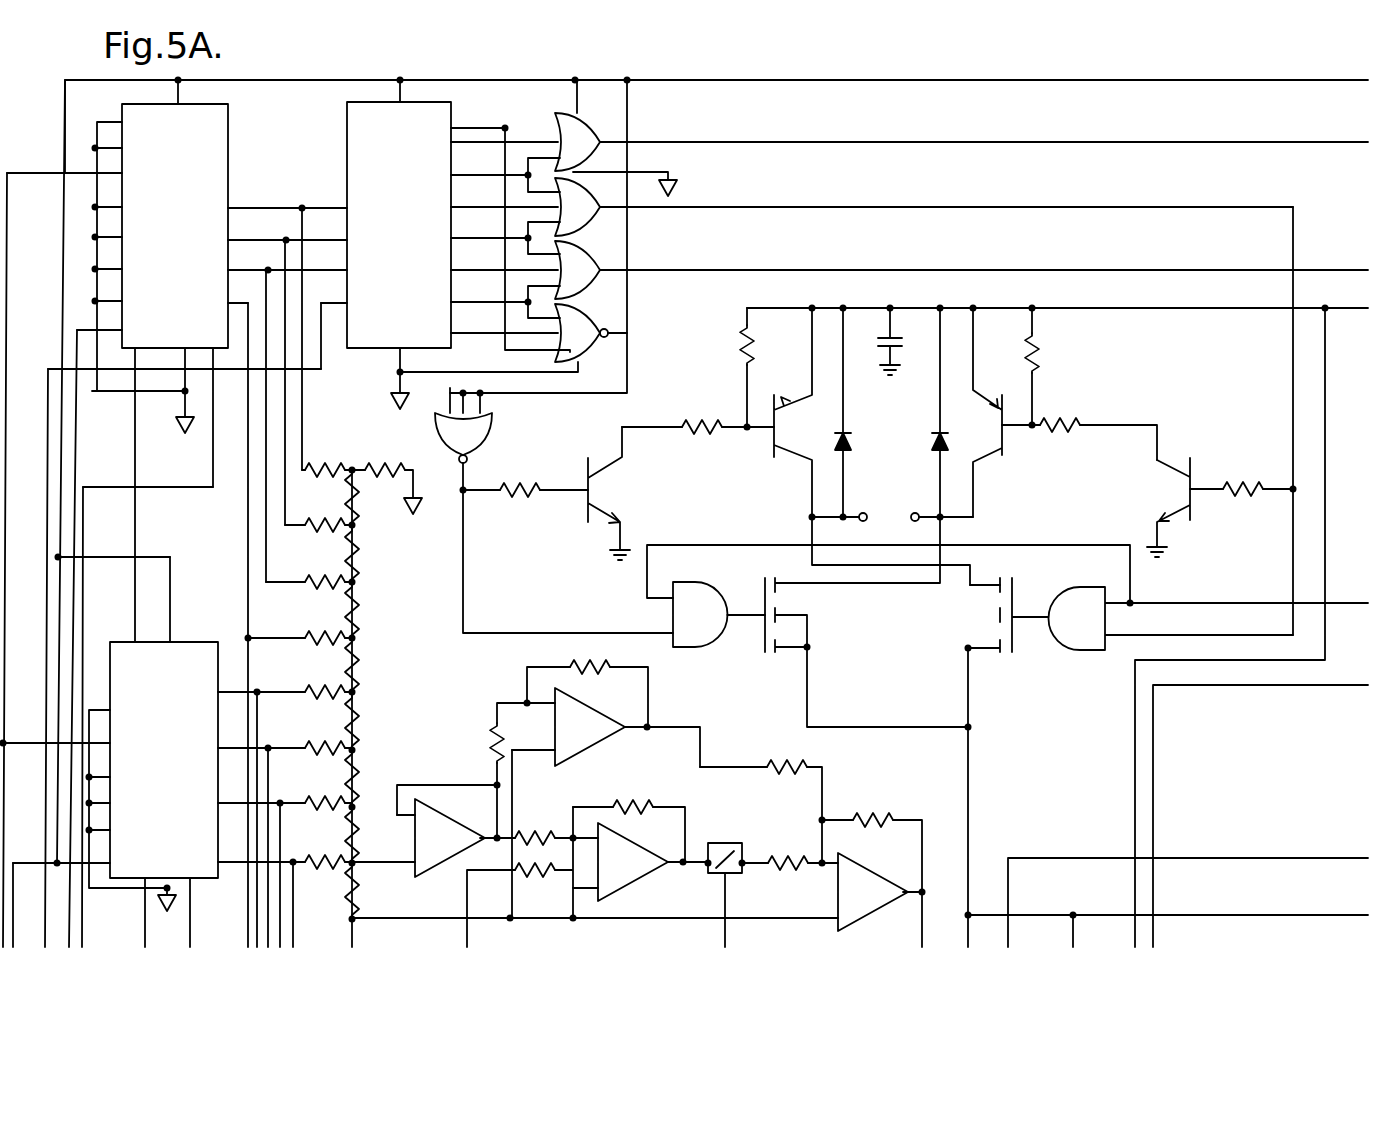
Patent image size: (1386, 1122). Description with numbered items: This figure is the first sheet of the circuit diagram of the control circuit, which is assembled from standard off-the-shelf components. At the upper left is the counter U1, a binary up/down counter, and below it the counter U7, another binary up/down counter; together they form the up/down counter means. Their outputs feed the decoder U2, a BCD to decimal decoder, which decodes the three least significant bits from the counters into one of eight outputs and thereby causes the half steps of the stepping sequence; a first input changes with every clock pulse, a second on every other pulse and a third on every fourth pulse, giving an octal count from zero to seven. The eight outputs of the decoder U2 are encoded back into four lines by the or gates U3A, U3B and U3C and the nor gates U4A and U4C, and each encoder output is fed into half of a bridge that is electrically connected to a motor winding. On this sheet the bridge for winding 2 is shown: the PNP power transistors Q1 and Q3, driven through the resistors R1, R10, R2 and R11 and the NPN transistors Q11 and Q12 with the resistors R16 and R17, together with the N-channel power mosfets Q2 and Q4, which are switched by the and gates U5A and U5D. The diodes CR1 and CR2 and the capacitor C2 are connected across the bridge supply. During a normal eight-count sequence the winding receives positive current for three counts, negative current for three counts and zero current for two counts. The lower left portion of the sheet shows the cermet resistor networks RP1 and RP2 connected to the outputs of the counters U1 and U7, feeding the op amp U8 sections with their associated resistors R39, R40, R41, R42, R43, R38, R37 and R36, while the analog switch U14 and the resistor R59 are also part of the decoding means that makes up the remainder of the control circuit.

The counter U1 is at (177, 235).
The decoder U2 is at (462, 244).
The or gate U3A is at (961, 125).
The or gate U3B is at (961, 270).
The or gate U3C is at (924, 207).
The nor gate U4A is at (591, 333).
The nor gate U4C is at (492, 440).
The and gate U5A is at (719, 614).
The and gate U5D is at (1208, 618).
The counter U7 is at (152, 794).
The op amp U8 is at (639, 809).
The switch U14 is at (722, 843).
The resistor R1 is at (698, 420).
The resistor R2 is at (1072, 412).
The resistor R10 is at (742, 359).
The resistor R11 is at (1040, 350).
The resistor R16 is at (536, 502).
The resistor R17 is at (1254, 480).
The resistor R36 is at (878, 812).
The resistor R37 is at (802, 872).
The resistor R38 is at (786, 762).
The resistor R39 is at (568, 664).
The resistor R40 is at (486, 736).
The resistor R41 is at (552, 824).
The resistor R42 is at (638, 798).
The resistor R43 is at (557, 876).
The resistor R59 is at (402, 466).
The cermet resistor network RP1 is at (358, 512).
The cermet resistor network RP2 is at (327, 522).
The transistor Q1 is at (778, 428).
The mosfet Q2 is at (1016, 652).
The transistor Q3 is at (1000, 425).
The mosfet Q4 is at (765, 655).
The transistor Q11 is at (592, 490).
The transistor Q12 is at (1188, 489).
The diode CR1 is at (851, 445).
The diode CR2 is at (930, 450).
The capacitor C2 is at (902, 340).
The winding 2 is at (1000, 530).